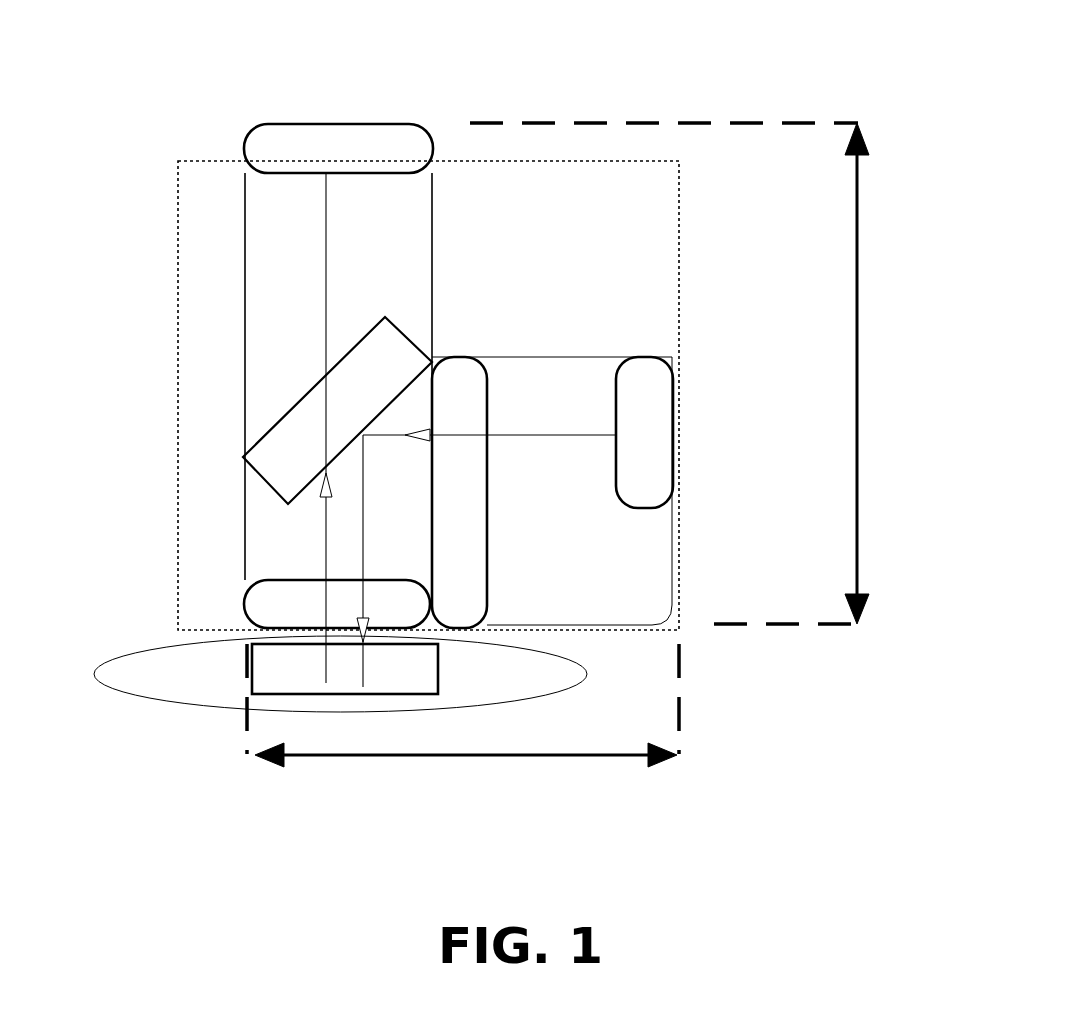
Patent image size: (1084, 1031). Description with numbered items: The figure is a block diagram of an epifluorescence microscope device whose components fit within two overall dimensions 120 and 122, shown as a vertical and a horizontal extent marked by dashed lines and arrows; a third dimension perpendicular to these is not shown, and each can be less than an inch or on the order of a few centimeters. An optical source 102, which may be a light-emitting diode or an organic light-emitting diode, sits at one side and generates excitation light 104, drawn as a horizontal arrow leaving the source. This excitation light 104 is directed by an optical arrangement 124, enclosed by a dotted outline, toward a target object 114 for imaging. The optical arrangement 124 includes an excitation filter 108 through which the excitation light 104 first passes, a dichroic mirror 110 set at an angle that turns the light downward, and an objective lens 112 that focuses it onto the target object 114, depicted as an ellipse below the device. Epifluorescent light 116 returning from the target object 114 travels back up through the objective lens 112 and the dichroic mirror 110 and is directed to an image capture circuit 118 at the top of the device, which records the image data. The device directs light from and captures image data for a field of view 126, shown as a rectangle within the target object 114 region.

The optical source 102 is at (676, 383).
The excitation light 104 is at (526, 436).
The excitation filter 108 is at (490, 387).
The dichroic mirror 110 is at (380, 333).
The objective lens 112 is at (370, 582).
The target object 114 is at (563, 660).
The epifluorescent light 116 is at (327, 258).
The image capture circuit 118 is at (414, 128).
The dimension 120 is at (866, 312).
The dimension 122 is at (553, 754).
The optical arrangement 124 is at (681, 213).
The field of view 126 is at (438, 667).